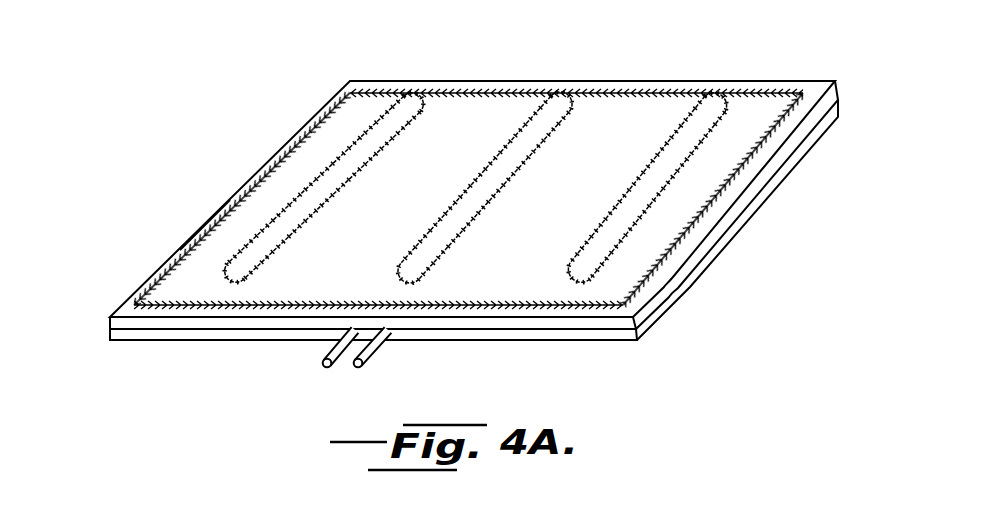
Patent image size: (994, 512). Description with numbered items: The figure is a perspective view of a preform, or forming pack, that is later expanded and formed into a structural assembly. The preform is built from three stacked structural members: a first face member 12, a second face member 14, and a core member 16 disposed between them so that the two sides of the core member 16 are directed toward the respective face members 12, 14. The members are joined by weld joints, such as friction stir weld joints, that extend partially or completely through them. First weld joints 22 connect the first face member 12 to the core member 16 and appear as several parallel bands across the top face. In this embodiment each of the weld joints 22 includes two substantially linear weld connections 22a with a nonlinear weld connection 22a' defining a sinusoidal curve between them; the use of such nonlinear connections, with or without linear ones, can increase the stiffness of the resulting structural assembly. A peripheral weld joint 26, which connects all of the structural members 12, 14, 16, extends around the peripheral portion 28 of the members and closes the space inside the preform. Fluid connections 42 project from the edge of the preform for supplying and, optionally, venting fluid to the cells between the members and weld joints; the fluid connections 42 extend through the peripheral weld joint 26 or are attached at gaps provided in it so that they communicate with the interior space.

The first face member 12 is at (838, 82).
The second face member 14 is at (813, 140).
The core member 16 is at (780, 167).
The first weld joints 22 is at (351, 131).
The linear weld connection 22a is at (476, 169).
The nonlinear weld connection 22a' is at (466, 188).
The peripheral weld joint 26 is at (226, 198).
The peripheral portion 28 is at (187, 233).
The fluid connections 42 is at (320, 367).